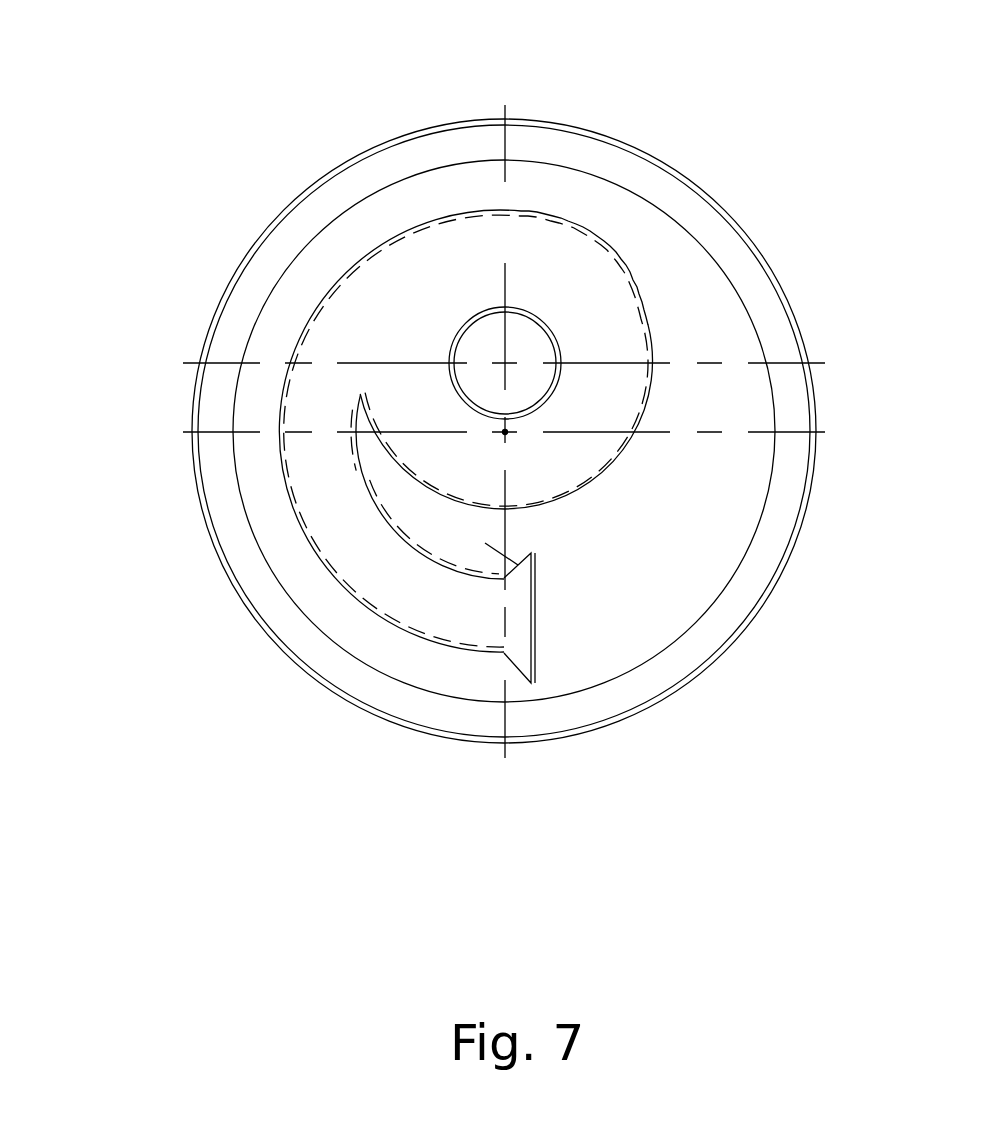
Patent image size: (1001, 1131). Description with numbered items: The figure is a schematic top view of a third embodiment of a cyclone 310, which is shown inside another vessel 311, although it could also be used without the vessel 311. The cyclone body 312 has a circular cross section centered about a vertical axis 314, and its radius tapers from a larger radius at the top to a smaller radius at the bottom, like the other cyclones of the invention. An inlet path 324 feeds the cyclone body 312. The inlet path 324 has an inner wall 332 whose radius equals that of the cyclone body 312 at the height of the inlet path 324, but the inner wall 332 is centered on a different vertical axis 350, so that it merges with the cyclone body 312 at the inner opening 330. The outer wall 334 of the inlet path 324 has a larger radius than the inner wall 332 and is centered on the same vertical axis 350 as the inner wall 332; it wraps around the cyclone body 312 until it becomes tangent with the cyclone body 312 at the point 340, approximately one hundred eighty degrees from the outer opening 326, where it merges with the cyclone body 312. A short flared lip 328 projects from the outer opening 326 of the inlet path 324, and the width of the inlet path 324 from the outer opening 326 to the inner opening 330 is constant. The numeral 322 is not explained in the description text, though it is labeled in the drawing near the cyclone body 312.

The cyclone 310 is at (600, 208).
The vessel 311 is at (213, 318).
The cyclone body 312 is at (633, 280).
The vertical axis 314 is at (505, 363).
The inlet bore 322 is at (470, 316).
The inlet path 324 is at (290, 492).
The outer opening 326 is at (505, 608).
The flared lip 328 is at (485, 543).
The inner opening 330 is at (360, 395).
The inner wall 332 is at (360, 467).
The outer wall 334 is at (347, 590).
The point 340 is at (505, 228).
The vertical axis 350 is at (505, 433).